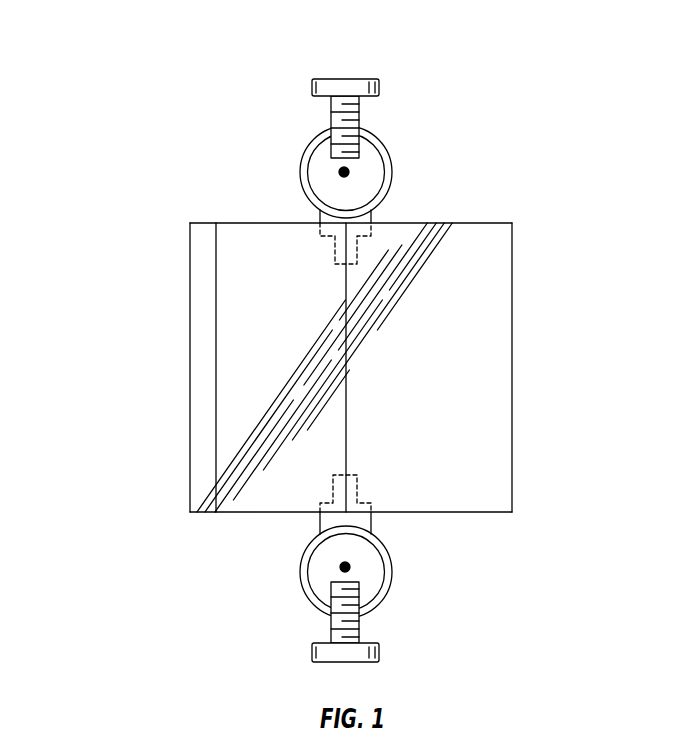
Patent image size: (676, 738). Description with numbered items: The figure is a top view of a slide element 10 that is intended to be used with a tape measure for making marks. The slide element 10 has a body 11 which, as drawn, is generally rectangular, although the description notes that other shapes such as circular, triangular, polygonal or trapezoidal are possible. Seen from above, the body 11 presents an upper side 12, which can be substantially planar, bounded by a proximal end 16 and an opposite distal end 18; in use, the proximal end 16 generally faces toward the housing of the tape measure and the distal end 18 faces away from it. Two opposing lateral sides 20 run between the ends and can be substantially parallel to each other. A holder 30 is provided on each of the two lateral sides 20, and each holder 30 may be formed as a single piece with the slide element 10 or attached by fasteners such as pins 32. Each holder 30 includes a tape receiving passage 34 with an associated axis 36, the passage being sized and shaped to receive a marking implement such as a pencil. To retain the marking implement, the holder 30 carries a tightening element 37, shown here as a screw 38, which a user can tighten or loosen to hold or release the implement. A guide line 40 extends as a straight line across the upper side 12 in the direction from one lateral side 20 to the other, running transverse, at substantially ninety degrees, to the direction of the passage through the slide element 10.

The slide element 10 is at (86, 240).
The body 11 is at (520, 243).
The upper side 12 is at (478, 328).
The proximal end 16 is at (190, 392).
The distal end 18 is at (512, 412).
The lateral sides 20 is at (248, 223).
The holder 30 is at (292, 155).
The pin 32 is at (350, 483).
The tape receiving passage 34 is at (380, 190).
The axis 36 is at (346, 171).
The tightening element 37 is at (322, 58).
The screw 38 is at (380, 85).
The guide line 40 is at (346, 438).